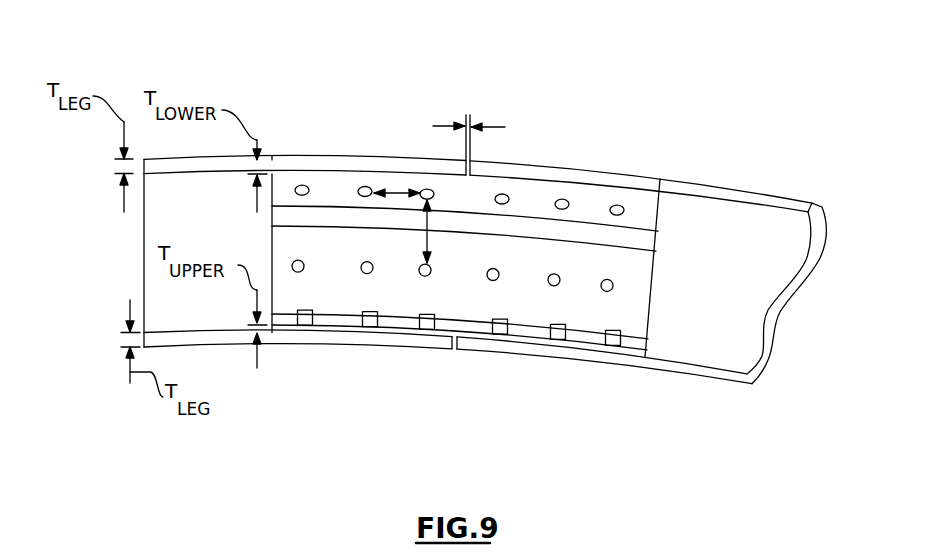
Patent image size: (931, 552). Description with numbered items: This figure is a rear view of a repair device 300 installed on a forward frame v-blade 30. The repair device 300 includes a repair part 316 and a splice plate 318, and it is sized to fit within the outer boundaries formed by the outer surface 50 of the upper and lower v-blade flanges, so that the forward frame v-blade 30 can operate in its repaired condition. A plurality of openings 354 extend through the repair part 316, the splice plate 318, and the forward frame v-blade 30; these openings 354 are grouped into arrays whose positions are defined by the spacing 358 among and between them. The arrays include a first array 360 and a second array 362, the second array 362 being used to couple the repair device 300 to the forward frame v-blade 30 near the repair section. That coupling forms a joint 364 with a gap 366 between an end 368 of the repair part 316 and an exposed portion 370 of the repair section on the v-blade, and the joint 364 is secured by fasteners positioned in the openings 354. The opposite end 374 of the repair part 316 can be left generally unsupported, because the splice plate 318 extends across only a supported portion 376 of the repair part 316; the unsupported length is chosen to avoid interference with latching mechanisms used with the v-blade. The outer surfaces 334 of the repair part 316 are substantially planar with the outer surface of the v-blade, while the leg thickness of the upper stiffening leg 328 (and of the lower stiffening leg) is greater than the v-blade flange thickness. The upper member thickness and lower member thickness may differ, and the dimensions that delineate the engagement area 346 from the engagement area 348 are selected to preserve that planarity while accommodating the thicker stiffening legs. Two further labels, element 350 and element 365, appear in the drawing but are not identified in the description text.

The repair device 300 is at (731, 60).
The forward frame v-blade 30 is at (728, 276).
The outer surface 50 is at (638, 177).
The repair part 316 is at (135, 272).
The splice plate 318 is at (662, 213).
The upper stiffening leg 328 is at (333, 339).
The outer surfaces 334 is at (320, 348).
The engagement area 346 is at (275, 422).
The engagement area 348 is at (463, 422).
The upper band 350 is at (330, 163).
The openings 354 is at (301, 185).
The spacing 358 is at (398, 196).
The first array 360 is at (440, 90).
The second array 362 is at (495, 112).
The joint 364 is at (472, 96).
The gap ends 365 is at (546, 65).
The gap 366 is at (497, 128).
The end of repair part 368 is at (453, 340).
The exposed portion 370 is at (463, 300).
The unsupported end 374 is at (143, 289).
The supported portion 376 is at (291, 362).